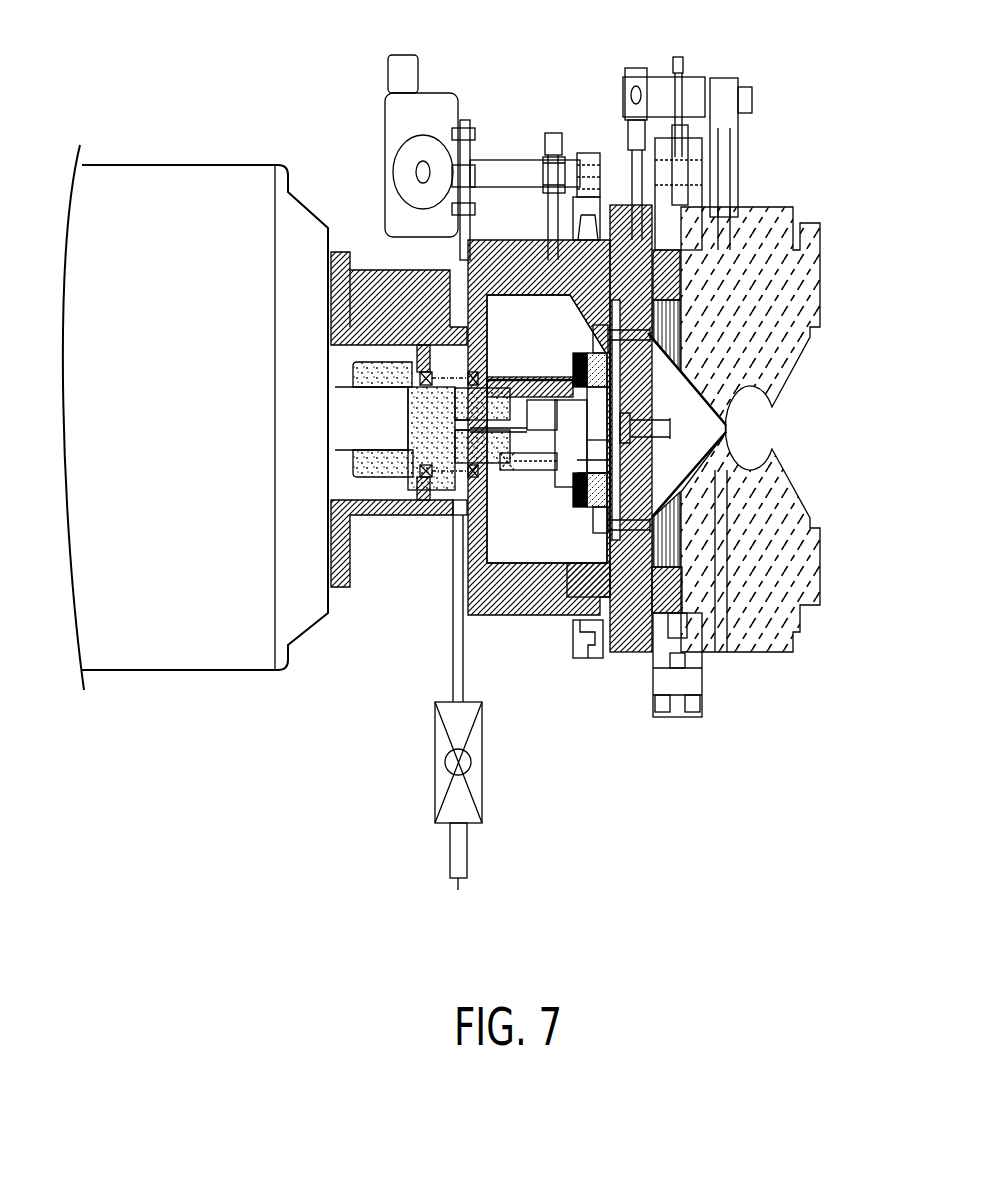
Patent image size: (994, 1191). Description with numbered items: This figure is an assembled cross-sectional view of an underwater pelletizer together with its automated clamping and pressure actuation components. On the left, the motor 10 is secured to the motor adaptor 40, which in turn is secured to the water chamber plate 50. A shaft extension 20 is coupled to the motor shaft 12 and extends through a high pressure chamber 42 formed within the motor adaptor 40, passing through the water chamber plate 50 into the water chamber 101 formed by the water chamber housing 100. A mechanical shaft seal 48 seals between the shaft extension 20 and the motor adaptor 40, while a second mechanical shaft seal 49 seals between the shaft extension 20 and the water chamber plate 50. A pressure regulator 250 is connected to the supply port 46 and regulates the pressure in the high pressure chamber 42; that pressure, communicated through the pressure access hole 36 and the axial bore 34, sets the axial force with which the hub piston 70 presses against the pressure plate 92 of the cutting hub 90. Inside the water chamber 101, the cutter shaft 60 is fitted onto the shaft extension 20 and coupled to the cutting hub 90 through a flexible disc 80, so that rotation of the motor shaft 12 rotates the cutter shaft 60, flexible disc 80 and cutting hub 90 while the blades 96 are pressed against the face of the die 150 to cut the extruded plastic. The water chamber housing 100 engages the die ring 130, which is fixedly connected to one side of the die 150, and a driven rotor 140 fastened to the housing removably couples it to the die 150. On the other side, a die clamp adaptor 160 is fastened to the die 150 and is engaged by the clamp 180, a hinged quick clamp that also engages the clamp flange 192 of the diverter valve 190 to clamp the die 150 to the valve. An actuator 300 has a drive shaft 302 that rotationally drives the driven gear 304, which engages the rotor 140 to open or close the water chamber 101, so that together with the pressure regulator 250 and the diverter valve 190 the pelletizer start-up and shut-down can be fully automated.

The motor 10 is at (192, 423).
The motor shaft 12 is at (352, 500).
The shaft extension 20 is at (372, 362).
The axial bore 34 is at (471, 429).
The pressure access hole 36 is at (429, 478).
The motor adaptor 40 is at (338, 252).
The high pressure chamber 42 is at (456, 505).
The supply port 46 is at (454, 560).
The mechanical shaft seal 48 is at (425, 372).
The mechanical shaft seal 49 is at (478, 372).
The water chamber plate 50 is at (466, 620).
The cutter shaft 60 is at (515, 392).
The hub piston 70 is at (560, 405).
The flexible disc 80 is at (584, 350).
The cutting hub 90 is at (580, 485).
The pressure plate 92 is at (565, 470).
The blades 96 is at (593, 515).
The water chamber housing 100 is at (560, 615).
The water chamber 101 is at (527, 560).
The die ring 130 is at (613, 205).
The driven rotor 140 is at (594, 658).
The die 150 is at (628, 653).
The die clamp adaptor 160 is at (666, 613).
The clamp 180 is at (692, 137).
The diverter valve 190 is at (790, 207).
The clamp flange 192 is at (688, 623).
The pressure regulator 250 is at (455, 880).
The actuator 300 is at (437, 105).
The drive shaft 302 is at (515, 160).
The driven gear 304 is at (595, 150).